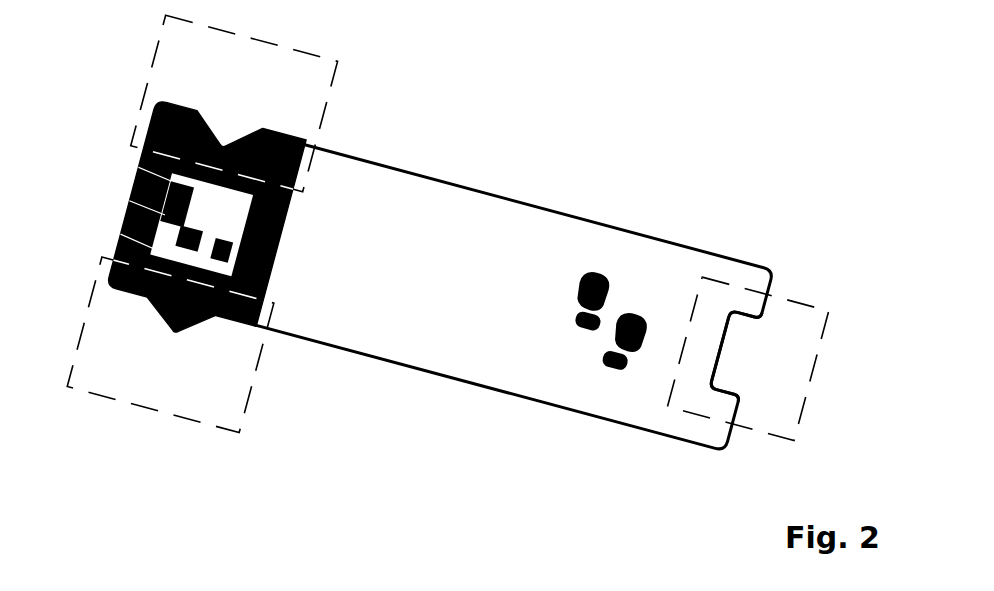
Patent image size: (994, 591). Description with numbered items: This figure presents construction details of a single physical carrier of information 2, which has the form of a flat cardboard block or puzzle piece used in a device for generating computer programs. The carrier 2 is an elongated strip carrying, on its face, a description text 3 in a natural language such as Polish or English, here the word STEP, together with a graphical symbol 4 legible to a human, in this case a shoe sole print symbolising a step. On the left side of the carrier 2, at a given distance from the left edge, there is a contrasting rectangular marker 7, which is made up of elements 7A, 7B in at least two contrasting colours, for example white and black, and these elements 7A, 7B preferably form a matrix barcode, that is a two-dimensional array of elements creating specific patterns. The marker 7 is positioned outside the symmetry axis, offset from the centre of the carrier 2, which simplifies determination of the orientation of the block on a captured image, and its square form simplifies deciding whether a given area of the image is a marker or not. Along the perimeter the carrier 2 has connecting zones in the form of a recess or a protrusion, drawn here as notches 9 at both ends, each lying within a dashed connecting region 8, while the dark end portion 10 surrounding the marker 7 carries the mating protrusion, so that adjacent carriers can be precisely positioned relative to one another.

The physical carrier of information 2 is at (476, 188).
The description text 3 is at (382, 287).
The graphical symbol 4 is at (592, 365).
The contrasting rectangular marker 7 is at (165, 215).
The marker element 7A is at (171, 181).
The marker element 7B is at (161, 252).
The end region 8 is at (150, 72).
The notch 9 is at (225, 137).
The holder block 10 is at (173, 337).